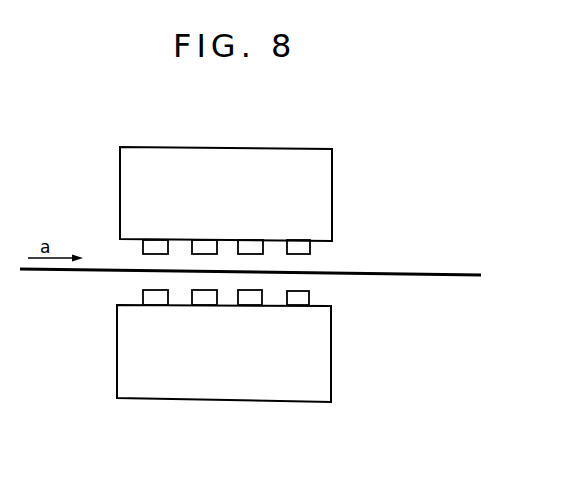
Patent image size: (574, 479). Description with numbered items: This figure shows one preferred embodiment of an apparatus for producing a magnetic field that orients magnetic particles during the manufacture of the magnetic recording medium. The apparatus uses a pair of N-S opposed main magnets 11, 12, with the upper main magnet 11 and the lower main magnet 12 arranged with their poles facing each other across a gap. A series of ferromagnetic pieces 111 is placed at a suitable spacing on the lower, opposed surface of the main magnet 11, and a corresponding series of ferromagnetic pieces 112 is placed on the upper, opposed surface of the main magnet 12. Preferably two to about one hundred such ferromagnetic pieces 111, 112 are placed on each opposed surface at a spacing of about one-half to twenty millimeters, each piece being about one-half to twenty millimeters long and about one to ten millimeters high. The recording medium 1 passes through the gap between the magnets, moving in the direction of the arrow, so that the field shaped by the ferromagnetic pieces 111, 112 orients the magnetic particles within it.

The magnetic recording medium / tape 1 is at (460, 272).
The main magnet 11 is at (323, 173).
The ferromagnetic pieces 111 is at (310, 253).
The ferromagnetic pieces 112 is at (306, 293).
The main magnet 12 is at (315, 387).